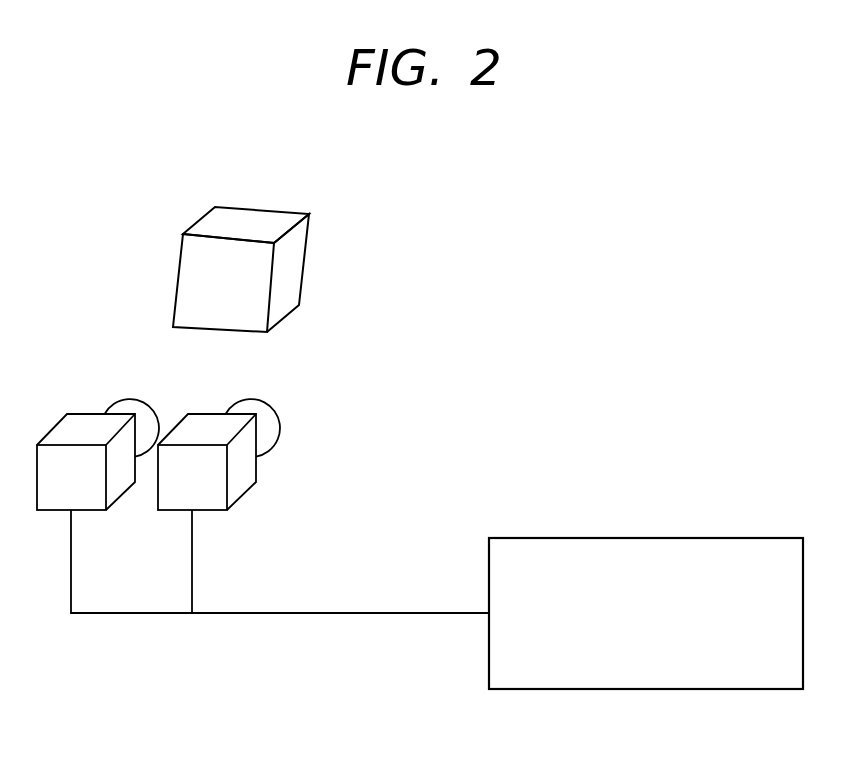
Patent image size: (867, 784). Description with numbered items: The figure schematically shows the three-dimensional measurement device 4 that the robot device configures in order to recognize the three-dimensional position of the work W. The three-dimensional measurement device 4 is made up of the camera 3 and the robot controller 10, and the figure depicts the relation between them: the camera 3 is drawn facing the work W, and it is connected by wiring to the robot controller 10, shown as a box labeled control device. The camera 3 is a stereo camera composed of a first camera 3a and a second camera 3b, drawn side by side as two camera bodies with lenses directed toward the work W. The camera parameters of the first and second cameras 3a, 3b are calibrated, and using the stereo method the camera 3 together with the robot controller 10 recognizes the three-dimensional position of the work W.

The work W is at (270, 217).
The camera 3 is at (156, 395).
The first camera 3a is at (90, 413).
The second camera 3b is at (193, 413).
The three-dimensional measurement device 4 is at (636, 350).
The robot controller 10 is at (735, 537).